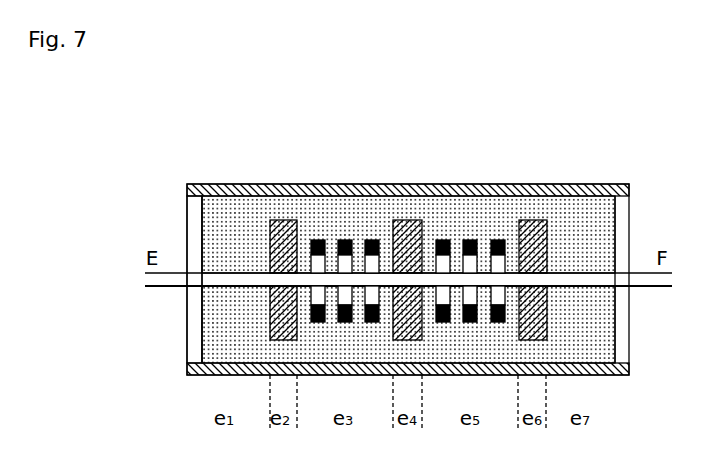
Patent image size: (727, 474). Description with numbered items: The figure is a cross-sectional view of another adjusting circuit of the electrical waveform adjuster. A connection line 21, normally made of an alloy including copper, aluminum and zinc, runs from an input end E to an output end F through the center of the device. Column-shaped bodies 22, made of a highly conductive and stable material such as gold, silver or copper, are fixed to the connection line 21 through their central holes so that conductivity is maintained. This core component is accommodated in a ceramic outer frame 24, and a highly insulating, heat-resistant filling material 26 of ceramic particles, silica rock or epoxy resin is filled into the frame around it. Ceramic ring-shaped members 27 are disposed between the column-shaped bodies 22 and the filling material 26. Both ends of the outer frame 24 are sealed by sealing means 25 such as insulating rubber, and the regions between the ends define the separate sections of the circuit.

The connection line 21 is at (180, 278).
The column-shaped body 22 is at (287, 221).
The ceramic outer frame 24 is at (408, 190).
The sealing means 25 is at (196, 212).
The filling material 26 is at (585, 239).
The ceramic ring-shaped member 27 is at (499, 238).